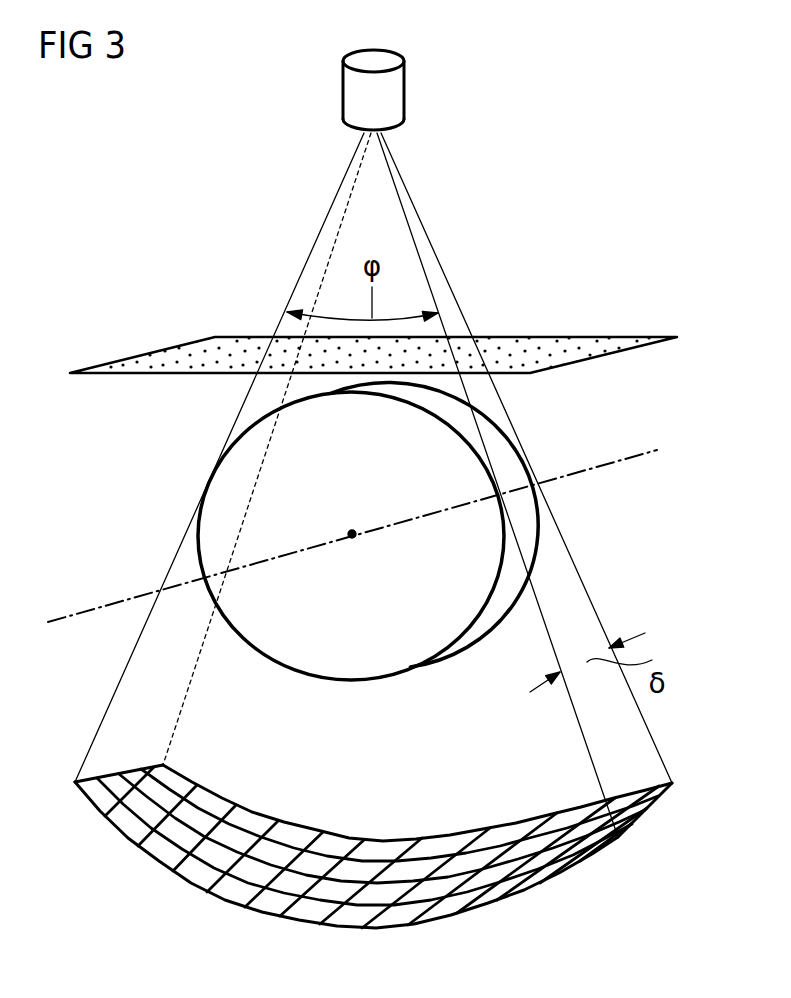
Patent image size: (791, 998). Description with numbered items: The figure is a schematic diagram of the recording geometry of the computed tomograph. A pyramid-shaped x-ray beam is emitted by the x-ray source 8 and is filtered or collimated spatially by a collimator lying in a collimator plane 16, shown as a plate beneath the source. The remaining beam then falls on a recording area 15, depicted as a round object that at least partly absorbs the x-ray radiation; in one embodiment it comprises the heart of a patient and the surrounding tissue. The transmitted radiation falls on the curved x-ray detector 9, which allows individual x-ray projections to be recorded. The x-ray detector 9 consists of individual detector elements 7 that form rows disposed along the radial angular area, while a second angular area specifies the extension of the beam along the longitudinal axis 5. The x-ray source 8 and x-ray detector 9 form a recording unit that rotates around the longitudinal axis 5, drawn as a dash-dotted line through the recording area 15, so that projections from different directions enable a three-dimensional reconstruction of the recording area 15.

The x-ray source 8 is at (405, 97).
The collimator plane 16 is at (592, 337).
The longitudinal axis 5 is at (592, 466).
The recording area 15 is at (277, 665).
The detector elements 7 is at (262, 908).
The x-ray detector 9 is at (474, 910).